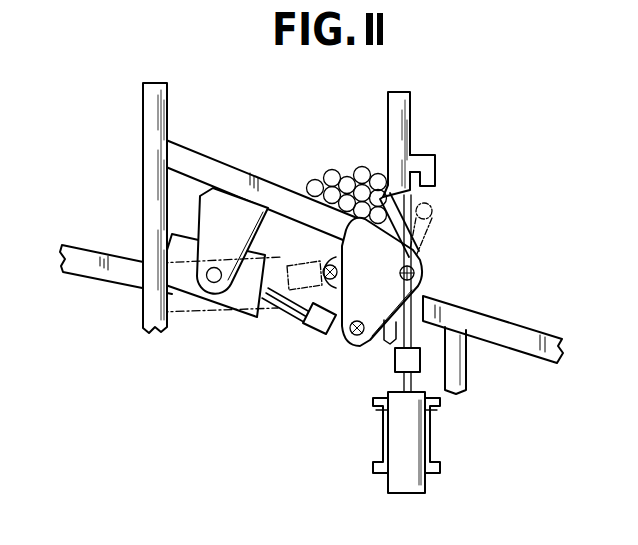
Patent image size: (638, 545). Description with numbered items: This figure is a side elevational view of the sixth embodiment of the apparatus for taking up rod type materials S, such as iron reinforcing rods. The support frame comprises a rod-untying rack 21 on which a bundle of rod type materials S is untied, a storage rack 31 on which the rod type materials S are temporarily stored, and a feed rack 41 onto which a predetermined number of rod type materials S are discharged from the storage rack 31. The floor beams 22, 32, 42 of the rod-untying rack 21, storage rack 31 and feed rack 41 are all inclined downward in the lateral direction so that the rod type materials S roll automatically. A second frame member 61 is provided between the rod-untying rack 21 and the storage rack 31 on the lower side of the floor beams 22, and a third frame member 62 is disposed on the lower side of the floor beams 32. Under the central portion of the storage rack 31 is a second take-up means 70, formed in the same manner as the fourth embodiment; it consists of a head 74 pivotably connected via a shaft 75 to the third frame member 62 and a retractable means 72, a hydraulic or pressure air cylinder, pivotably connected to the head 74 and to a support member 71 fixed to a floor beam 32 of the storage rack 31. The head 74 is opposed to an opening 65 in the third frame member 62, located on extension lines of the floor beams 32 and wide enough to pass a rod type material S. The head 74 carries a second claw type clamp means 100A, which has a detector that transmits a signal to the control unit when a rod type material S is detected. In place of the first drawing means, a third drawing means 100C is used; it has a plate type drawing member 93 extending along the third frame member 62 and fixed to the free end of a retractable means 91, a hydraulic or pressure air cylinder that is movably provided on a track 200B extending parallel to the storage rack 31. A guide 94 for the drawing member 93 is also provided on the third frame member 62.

The rod-untying rack 21 is at (78, 246).
The floor beams 22 is at (97, 273).
The storage rack 31 is at (211, 157).
The floor beams 32 is at (182, 174).
The feed rack 41 is at (510, 313).
The floor beams 42 is at (522, 353).
The second frame member 61 is at (145, 120).
The third frame member 62 is at (411, 122).
The opening 65 is at (384, 172).
The second take-up means 70 is at (240, 321).
The support member 71 is at (203, 222).
The retractable means 72 is at (197, 307).
The head 74 is at (345, 338).
The shaft 75 is at (422, 274).
The retractable means 91 is at (426, 443).
The plate type drawing member 93 is at (426, 307).
The guide 94 is at (437, 163).
The second claw type clamp means 100A is at (430, 233).
The third drawing means 100C is at (390, 357).
The track 200B is at (376, 435).
The rod type materials S is at (347, 183).